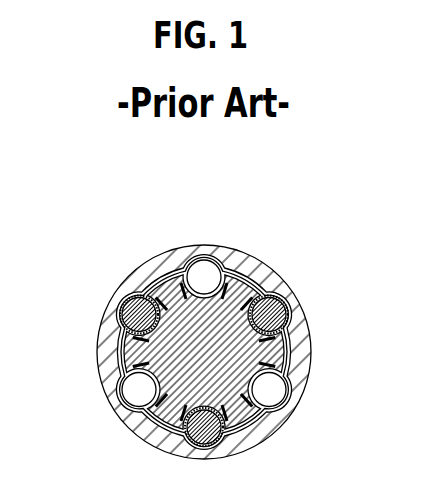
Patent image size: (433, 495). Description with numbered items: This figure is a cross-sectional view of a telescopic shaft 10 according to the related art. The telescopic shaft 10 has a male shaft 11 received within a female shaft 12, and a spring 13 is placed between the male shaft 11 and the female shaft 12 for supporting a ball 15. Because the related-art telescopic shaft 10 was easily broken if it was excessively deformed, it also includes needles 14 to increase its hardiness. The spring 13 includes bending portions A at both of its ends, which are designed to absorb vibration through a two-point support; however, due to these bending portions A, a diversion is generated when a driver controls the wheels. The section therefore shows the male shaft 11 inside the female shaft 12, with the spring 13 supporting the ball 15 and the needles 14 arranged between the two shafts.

The telescopic shaft 10 is at (210, 321).
The male shaft 11 is at (118, 355).
The female shaft 12 is at (305, 350).
The spring 13 is at (230, 275).
The needles 14 is at (122, 306).
The ball 15 is at (198, 267).
The bending portions A is at (132, 422).